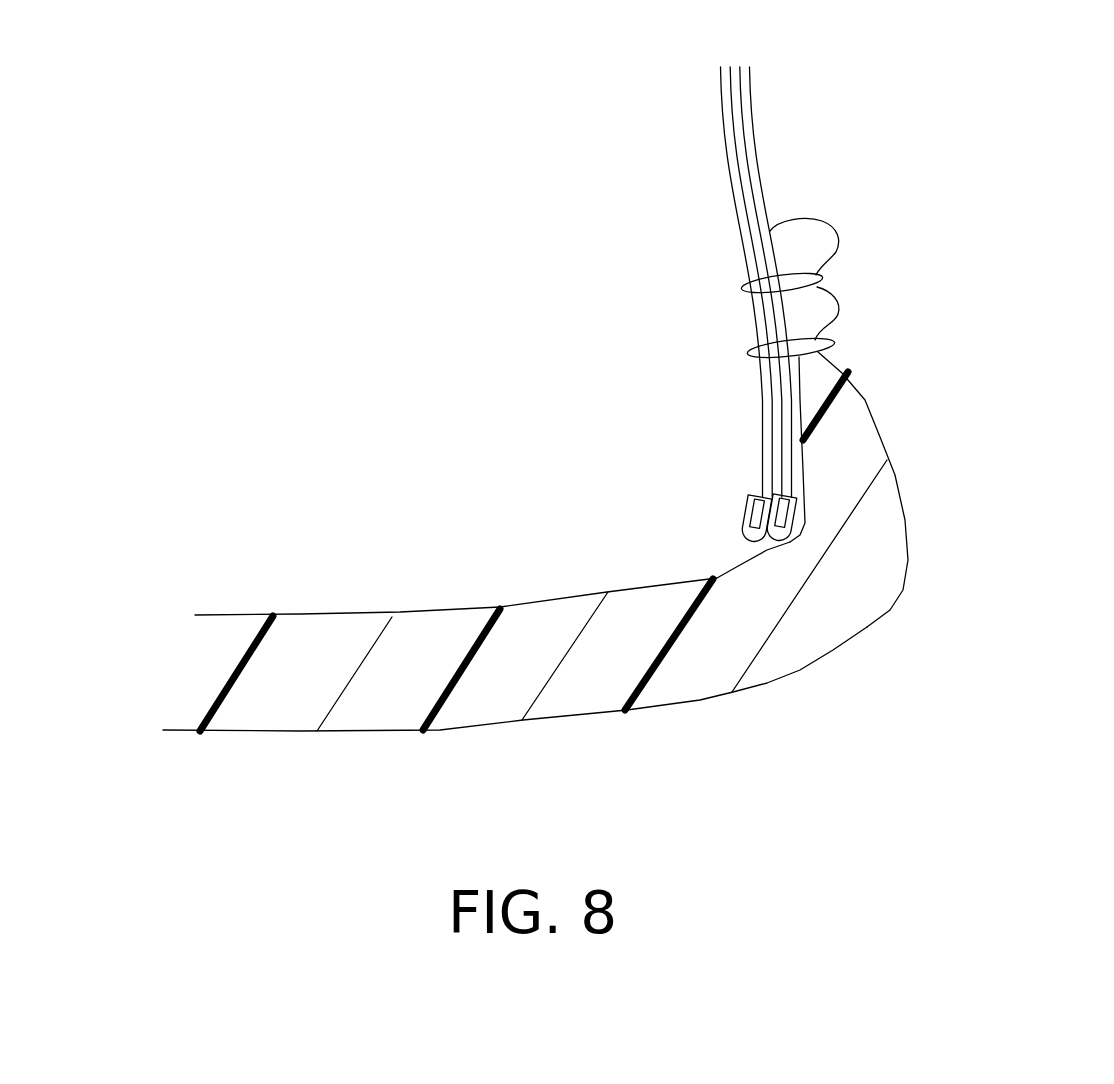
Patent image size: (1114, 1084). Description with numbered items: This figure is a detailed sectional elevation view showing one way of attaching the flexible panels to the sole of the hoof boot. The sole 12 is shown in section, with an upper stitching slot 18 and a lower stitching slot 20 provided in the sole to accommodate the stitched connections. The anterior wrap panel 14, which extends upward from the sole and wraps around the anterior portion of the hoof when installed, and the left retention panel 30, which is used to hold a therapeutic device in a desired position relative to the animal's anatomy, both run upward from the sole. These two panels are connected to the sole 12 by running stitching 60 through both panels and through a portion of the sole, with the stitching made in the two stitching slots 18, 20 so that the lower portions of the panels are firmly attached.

The sole 12 is at (867, 598).
The anterior wrap panel 14 is at (754, 133).
The upper stitching slot 18 is at (834, 254).
The lower stitching slot 20 is at (880, 438).
The left retention panel 30 is at (722, 133).
The stitching 60 is at (790, 284).